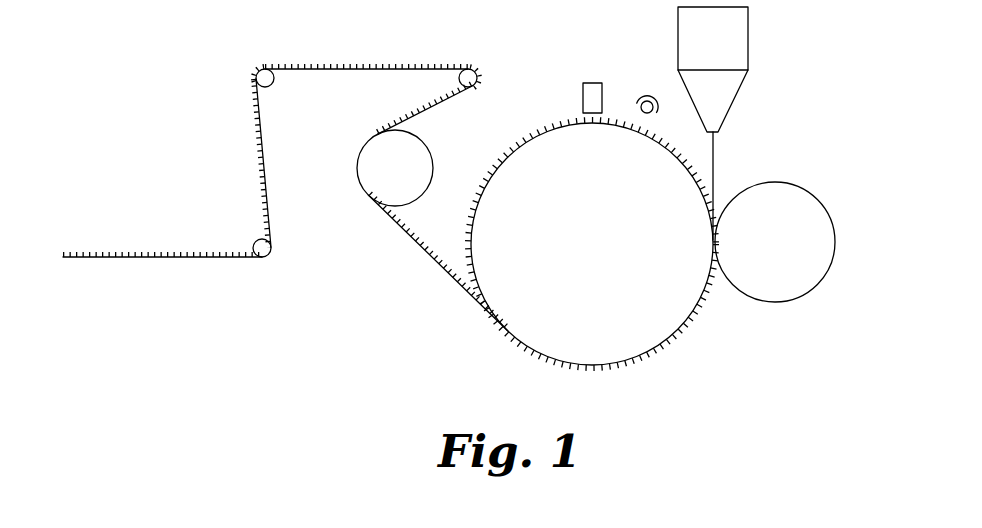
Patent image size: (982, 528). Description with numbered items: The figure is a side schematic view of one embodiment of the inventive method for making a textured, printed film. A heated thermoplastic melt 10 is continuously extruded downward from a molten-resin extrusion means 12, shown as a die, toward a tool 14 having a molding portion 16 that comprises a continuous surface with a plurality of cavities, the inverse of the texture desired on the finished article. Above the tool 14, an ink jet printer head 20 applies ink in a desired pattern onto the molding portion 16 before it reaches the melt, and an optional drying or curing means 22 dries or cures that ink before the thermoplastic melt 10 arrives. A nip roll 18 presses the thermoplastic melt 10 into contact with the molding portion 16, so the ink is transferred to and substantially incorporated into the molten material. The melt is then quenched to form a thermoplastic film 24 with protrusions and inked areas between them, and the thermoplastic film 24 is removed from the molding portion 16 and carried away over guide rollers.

The heated thermoplastic melt 10 is at (715, 163).
The molten-resin extrusion means 12 is at (738, 36).
The tool 14 is at (598, 340).
The molding portion 16 is at (547, 132).
The nip roll 18 is at (793, 200).
The ink jet printer head 20 is at (592, 83).
The drying or curing means 22 is at (652, 95).
The thermoplastic film 24 is at (155, 258).